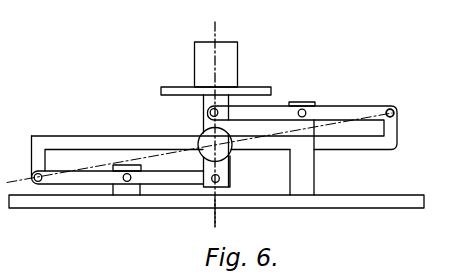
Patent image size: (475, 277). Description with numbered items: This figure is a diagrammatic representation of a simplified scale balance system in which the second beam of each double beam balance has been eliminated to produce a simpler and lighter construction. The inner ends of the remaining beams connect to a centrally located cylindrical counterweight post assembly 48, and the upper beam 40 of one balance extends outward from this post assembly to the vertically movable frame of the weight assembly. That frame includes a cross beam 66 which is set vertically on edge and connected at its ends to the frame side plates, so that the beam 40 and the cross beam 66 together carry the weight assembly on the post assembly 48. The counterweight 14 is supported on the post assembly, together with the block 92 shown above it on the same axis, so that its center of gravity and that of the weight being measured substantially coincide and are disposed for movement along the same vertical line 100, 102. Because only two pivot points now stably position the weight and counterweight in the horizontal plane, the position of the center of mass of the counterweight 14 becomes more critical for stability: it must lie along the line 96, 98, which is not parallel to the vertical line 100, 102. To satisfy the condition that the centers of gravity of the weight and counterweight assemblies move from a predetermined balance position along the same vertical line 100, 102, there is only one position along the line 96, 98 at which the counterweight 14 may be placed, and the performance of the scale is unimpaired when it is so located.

The counterweight 14 is at (204, 137).
The upper beam 40 is at (338, 106).
The cylindrical counterweight post assembly 48 is at (229, 168).
The cross beam 66 is at (116, 135).
The block 92 is at (239, 70).
The line 96, 98 (pivot line) 96 is at (23, 174).
The line 96, 98 (pivot line) 98 is at (401, 109).
The vertical line 100, 102 100 is at (217, 31).
The vertical line 100 102 is at (213, 219).